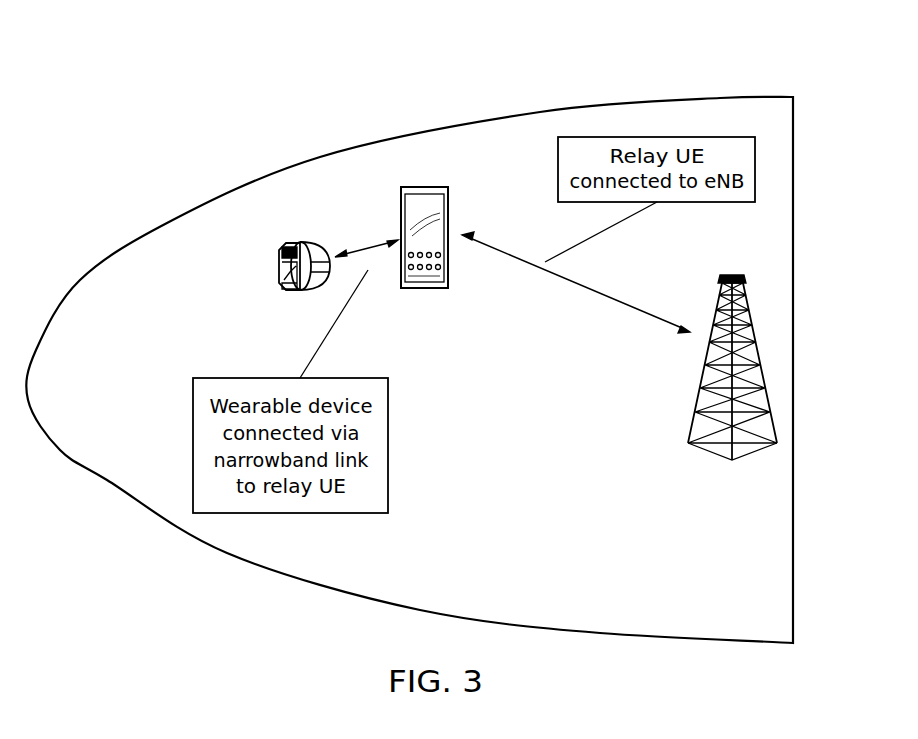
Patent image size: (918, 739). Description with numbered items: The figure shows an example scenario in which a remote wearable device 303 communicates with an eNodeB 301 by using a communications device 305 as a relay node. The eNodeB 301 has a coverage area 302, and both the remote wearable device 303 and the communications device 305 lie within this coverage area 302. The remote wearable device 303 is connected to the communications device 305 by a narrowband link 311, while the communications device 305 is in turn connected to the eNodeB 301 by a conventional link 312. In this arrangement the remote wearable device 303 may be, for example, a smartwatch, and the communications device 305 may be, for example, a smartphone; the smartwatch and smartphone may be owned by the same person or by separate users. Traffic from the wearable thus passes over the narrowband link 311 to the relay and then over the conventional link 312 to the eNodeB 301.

The eNodeB 301 is at (763, 357).
The coverage area 302 is at (720, 96).
The remote wearable device 303 is at (303, 242).
The communications device 305 is at (425, 289).
The narrowband link 311 is at (367, 252).
The conventional link 312 is at (602, 297).